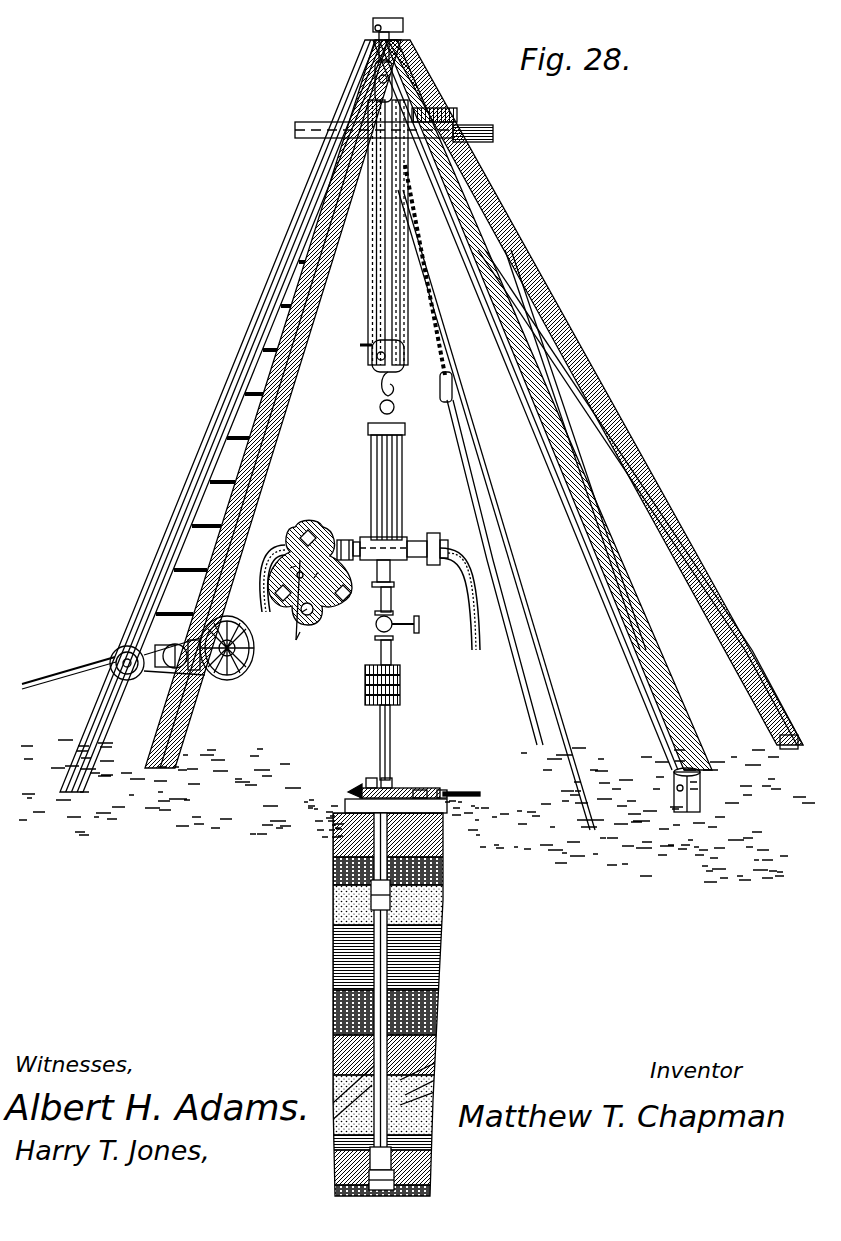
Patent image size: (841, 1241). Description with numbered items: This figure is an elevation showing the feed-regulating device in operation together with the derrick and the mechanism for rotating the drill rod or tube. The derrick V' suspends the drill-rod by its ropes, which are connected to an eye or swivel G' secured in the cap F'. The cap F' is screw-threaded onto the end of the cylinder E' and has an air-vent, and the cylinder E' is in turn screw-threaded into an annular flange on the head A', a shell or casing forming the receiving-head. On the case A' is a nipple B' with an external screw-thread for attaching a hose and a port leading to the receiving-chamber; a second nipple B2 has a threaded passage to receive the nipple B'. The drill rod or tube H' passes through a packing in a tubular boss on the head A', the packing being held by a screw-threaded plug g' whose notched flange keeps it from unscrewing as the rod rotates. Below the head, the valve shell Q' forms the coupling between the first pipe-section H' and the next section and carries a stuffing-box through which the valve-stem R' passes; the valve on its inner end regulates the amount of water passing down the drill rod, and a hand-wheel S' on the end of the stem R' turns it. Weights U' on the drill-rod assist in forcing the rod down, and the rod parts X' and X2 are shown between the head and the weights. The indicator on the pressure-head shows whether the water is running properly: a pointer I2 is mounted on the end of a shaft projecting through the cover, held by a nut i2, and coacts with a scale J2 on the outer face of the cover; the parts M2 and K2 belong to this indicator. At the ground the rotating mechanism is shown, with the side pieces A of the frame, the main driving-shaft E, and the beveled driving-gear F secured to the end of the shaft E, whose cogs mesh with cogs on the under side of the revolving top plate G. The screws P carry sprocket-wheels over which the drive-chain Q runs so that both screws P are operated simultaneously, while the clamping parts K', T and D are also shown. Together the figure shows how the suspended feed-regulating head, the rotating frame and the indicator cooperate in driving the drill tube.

The derrick V' is at (431, 435).
The eye or swivel G' is at (398, 393).
The cap F' is at (372, 433).
The cylinder E' is at (373, 487).
The nipple B' is at (399, 544).
The nipple B2 is at (340, 540).
The scale J2 is at (308, 530).
The plate portion M2 is at (286, 571).
The plate portion K2 is at (322, 572).
The pointer I2 is at (302, 612).
The nut i2 is at (302, 638).
The shell or casing forming a receiving-head A' is at (369, 571).
The screw-threaded plug g' is at (396, 578).
The rod X' is at (373, 597).
The drill rod or tube H' is at (399, 683).
The rod section X2 is at (381, 606).
The valve shell or case Q' is at (395, 610).
The valve-stem R' is at (401, 623).
The hand-wheel S' is at (411, 627).
The weights U' is at (393, 685).
The drive-chain Q is at (364, 767).
The screws P is at (388, 778).
The revolving top plate G is at (400, 776).
The wedge K' is at (337, 792).
The clamp T is at (366, 783).
The beveled driving-gear F is at (423, 772).
The block D is at (442, 790).
The main driving-shaft E is at (461, 782).
The side pieces of the frame A is at (407, 811).